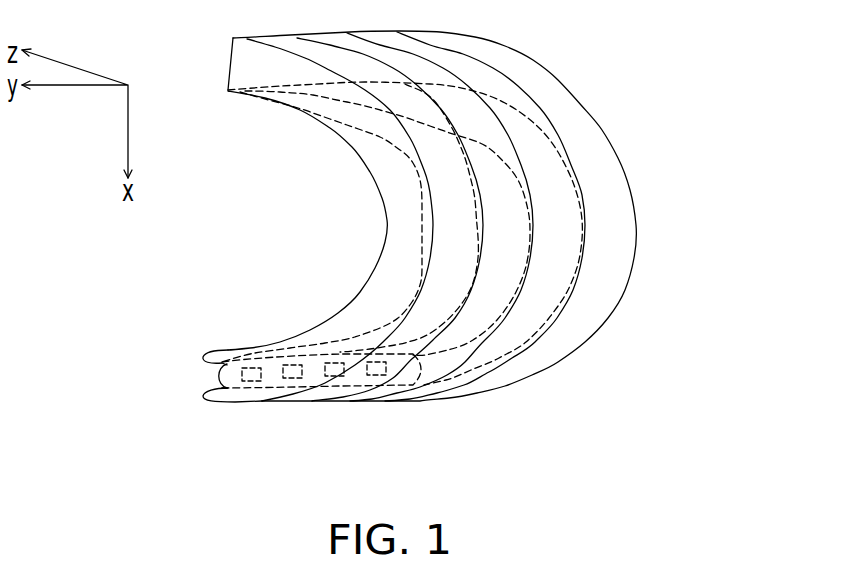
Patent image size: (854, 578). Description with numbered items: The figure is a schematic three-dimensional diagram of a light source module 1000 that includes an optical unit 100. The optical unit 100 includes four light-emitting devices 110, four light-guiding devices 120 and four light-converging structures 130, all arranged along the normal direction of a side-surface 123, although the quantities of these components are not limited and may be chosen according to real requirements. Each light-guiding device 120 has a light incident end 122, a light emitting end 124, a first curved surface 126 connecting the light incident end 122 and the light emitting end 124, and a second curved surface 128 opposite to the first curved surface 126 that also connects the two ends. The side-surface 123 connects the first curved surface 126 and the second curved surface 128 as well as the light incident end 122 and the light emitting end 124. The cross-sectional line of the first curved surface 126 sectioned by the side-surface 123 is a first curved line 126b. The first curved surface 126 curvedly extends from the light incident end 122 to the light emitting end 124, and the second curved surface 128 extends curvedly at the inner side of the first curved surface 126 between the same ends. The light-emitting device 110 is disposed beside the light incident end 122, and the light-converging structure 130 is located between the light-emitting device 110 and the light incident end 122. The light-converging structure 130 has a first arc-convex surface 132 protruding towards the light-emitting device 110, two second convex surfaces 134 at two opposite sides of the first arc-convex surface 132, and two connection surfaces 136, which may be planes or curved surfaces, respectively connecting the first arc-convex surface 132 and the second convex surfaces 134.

The optical unit 100 is at (425, 248).
The light-emitting device 110 is at (253, 388).
The light-guiding device 120 is at (400, 230).
The light incident end 122 is at (268, 383).
The side-surface 123 is at (263, 75).
The light emitting end 124 is at (224, 57).
The first curved surface 126 is at (467, 237).
The first curved line 126b is at (634, 207).
The second curved surface 128 is at (353, 162).
The light-converging structure 130 is at (233, 350).
The first arc-convex surface 132 is at (211, 374).
The second convex surface 134 is at (218, 339).
The connection surface 136 is at (213, 359).
The light source module 1000 is at (766, 456).